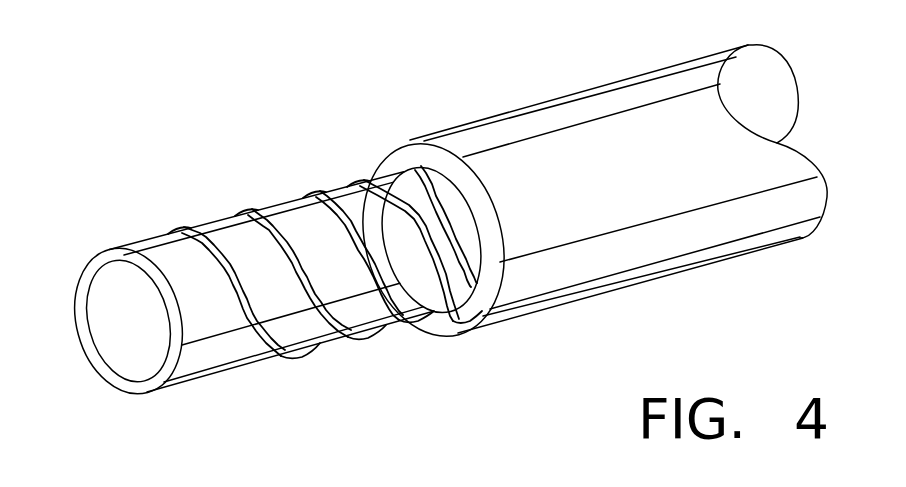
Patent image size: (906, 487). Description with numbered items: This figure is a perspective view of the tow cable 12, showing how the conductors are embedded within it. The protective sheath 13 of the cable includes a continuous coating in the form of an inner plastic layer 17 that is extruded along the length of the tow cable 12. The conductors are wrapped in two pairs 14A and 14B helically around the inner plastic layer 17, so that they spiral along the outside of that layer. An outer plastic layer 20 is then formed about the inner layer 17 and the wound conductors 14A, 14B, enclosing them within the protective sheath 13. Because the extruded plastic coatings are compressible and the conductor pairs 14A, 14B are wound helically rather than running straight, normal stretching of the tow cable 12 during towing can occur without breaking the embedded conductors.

The tow cable 12 is at (113, 334).
The inner plastic layer 17 is at (128, 251).
The first pair of conductors 14A is at (312, 194).
The second pair of conductors 14B is at (347, 337).
The outer plastic layer 20 is at (420, 153).
The protective sheath 13 is at (653, 72).